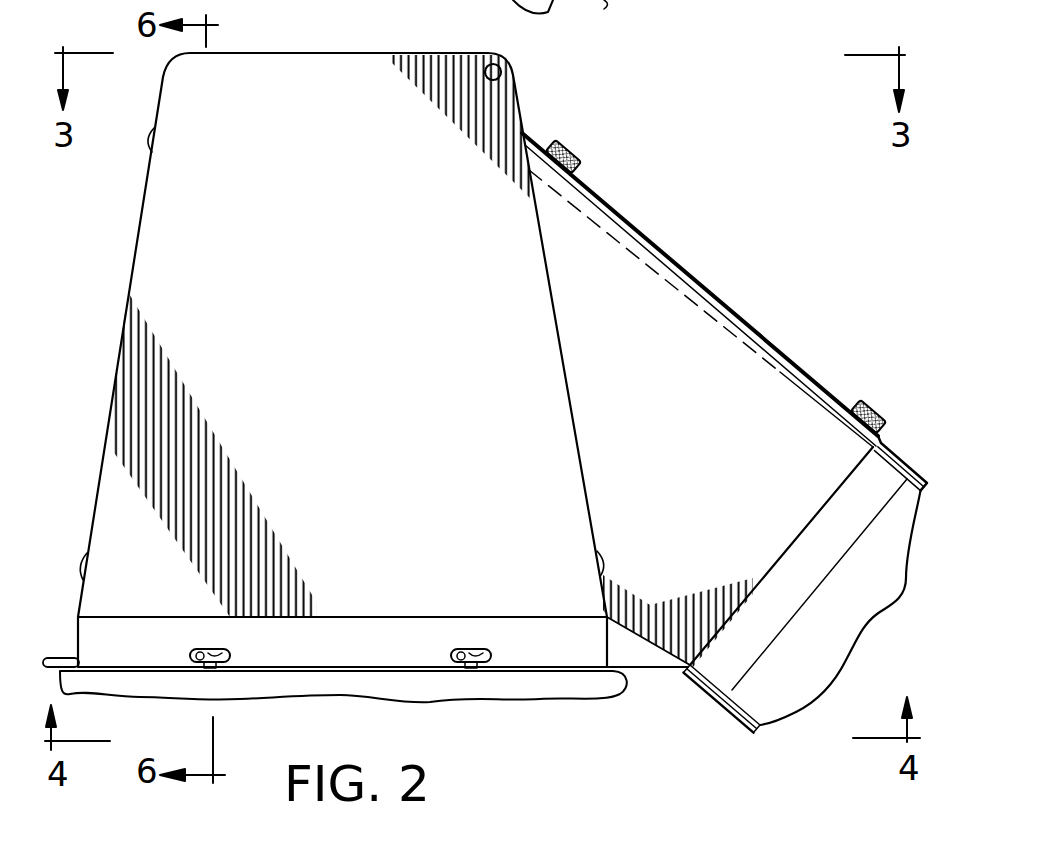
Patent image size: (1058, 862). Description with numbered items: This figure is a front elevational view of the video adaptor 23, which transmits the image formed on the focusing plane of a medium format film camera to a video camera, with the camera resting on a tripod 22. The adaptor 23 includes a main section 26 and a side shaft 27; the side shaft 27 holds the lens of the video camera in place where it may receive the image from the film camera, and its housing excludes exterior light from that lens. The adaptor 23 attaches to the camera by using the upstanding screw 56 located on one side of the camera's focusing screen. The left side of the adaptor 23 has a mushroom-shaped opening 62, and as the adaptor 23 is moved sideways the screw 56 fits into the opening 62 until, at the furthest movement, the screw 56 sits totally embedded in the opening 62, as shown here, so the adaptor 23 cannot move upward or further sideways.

The tripod 22 is at (560, 12).
The video adaptor 23 is at (106, 352).
The main section 26 is at (172, 218).
The side shaft 27 is at (698, 322).
The upstanding screw 56 is at (196, 651).
The mushroom-shaped opening 62 is at (226, 650).